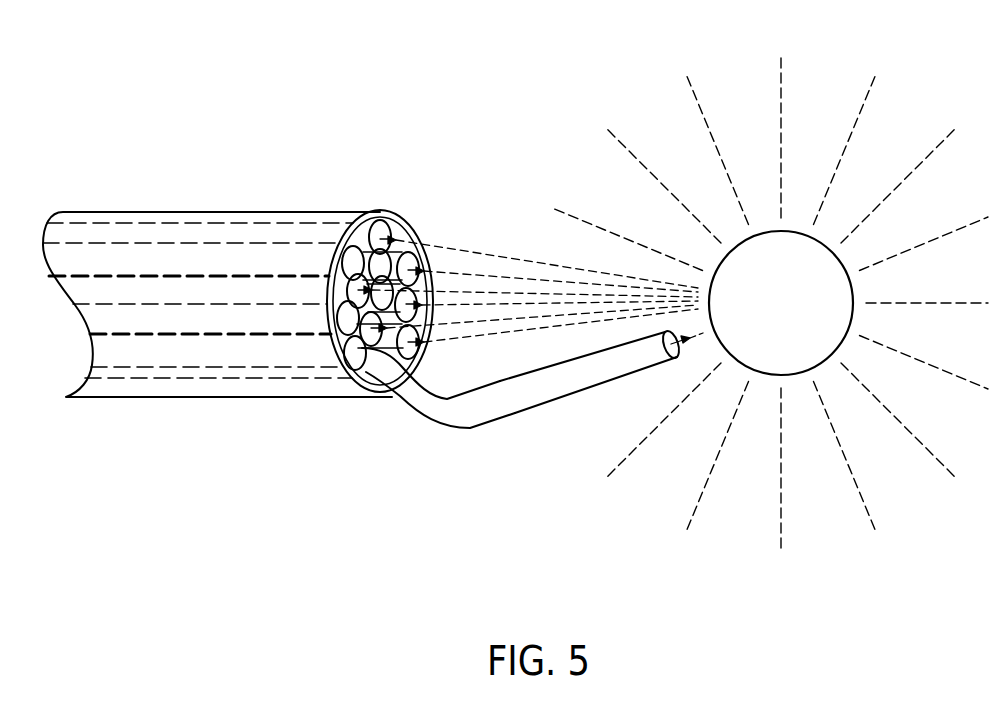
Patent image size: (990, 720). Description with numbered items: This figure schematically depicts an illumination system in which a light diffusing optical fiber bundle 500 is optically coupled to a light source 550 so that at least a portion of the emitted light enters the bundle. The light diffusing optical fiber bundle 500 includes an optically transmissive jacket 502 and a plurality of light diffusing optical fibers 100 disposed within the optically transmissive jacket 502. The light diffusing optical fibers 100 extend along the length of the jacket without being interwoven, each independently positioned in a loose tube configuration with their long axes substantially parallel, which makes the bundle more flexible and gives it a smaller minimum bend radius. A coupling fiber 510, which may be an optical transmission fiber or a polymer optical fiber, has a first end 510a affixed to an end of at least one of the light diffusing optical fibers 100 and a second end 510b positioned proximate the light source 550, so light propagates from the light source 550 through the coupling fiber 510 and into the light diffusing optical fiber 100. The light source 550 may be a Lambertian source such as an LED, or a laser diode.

The light diffusing optical fiber bundle 500 is at (226, 164).
The optically transmissive jacket 502 is at (117, 210).
The light diffusing optical fiber 100 is at (380, 228).
The coupling fiber 510 is at (467, 425).
The first end of coupling fiber 510a is at (403, 387).
The second end of coupling fiber 510b is at (652, 362).
The light source 550 is at (806, 316).